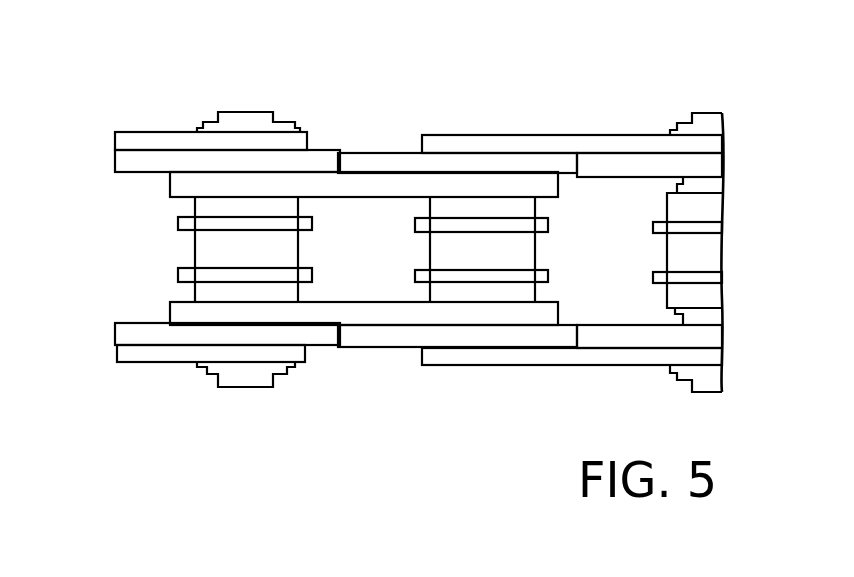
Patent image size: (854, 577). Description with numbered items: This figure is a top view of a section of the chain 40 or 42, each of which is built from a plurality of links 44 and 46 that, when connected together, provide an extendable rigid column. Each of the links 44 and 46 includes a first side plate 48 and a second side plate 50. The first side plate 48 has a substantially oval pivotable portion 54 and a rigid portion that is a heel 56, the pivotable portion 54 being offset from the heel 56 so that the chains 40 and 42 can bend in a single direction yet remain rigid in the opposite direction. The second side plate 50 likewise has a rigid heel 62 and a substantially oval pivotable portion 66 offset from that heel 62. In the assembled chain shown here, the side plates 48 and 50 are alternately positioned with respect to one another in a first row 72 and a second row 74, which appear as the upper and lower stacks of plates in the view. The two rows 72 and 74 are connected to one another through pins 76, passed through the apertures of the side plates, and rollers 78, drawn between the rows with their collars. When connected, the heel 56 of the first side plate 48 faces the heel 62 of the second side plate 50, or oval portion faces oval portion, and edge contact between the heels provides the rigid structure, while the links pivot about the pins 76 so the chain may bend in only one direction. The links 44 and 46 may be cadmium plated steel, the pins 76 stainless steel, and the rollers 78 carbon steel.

The chain 40 is at (443, 227).
The chain 42 is at (768, 146).
The link 44 is at (183, 132).
The link 46 is at (395, 153).
The first side plate 48 is at (131, 132).
The second side plate 50 is at (378, 198).
The pivotable portion 54 is at (160, 132).
The heel 56 is at (318, 163).
The heel 62 is at (323, 341).
The pivotable portion 66 is at (177, 365).
The first row 72 is at (113, 165).
The second row 74 is at (117, 344).
The pin 76 is at (252, 112).
The roller 78 is at (193, 247).